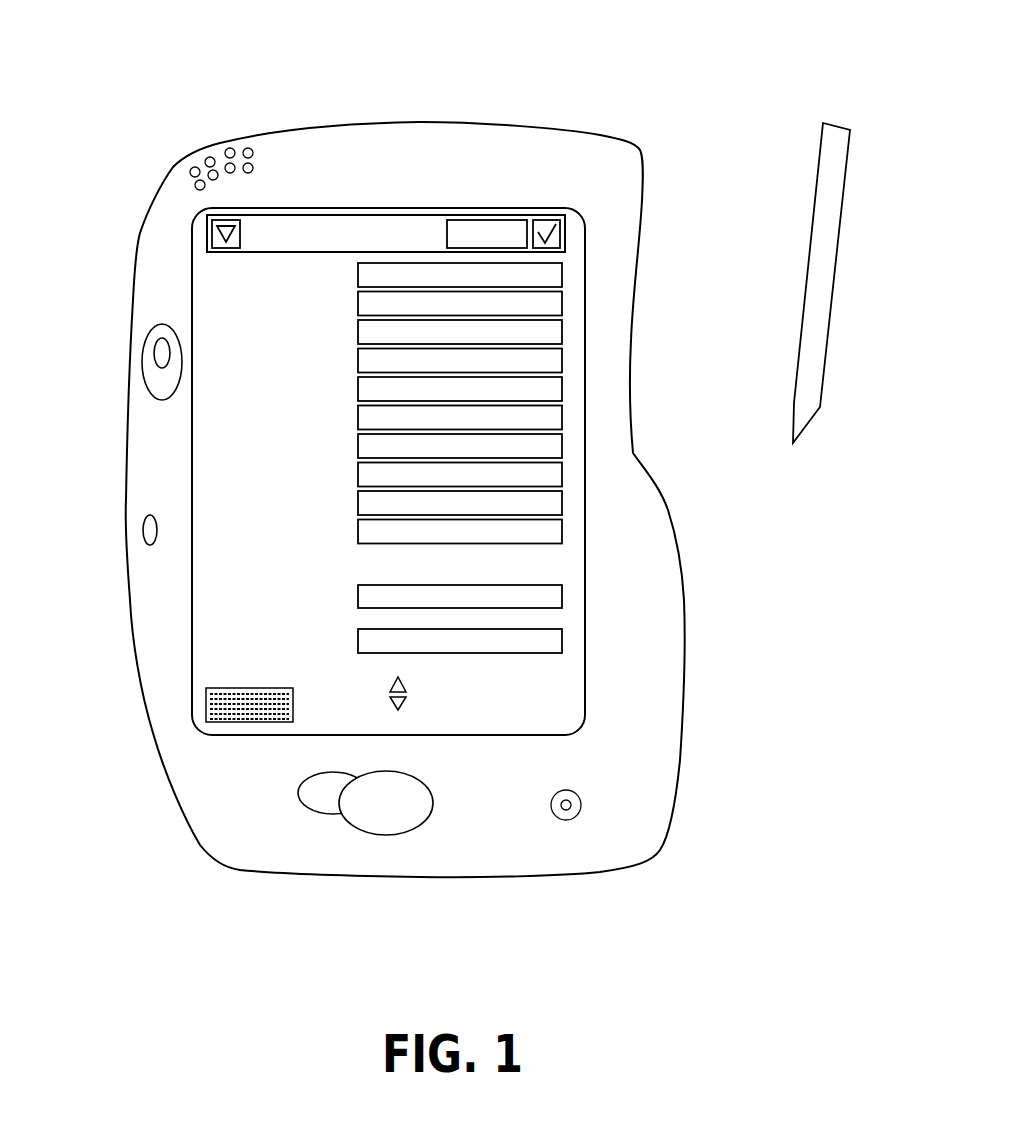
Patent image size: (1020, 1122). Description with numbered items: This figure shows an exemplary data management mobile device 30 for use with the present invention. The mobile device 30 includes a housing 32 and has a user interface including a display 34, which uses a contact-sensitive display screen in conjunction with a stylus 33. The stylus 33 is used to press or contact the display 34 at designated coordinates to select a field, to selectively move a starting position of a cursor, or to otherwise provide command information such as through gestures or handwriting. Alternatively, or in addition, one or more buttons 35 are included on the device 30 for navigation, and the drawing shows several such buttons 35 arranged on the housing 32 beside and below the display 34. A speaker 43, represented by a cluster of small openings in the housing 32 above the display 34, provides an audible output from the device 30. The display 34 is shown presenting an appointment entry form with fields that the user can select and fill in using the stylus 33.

The data management mobile device 30 is at (122, 75).
The housing 32 is at (430, 122).
The stylus 33 is at (830, 308).
The display 34 is at (527, 528).
The buttons 35 is at (155, 352).
The speaker 43 is at (230, 150).